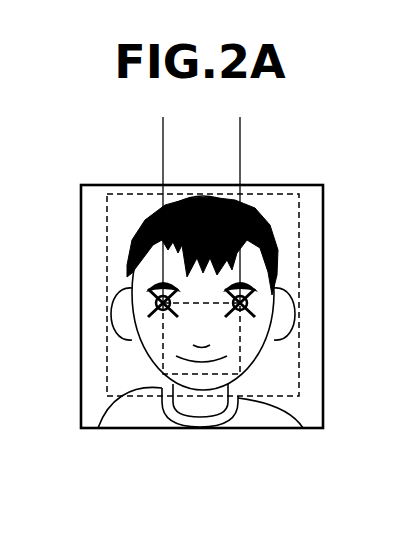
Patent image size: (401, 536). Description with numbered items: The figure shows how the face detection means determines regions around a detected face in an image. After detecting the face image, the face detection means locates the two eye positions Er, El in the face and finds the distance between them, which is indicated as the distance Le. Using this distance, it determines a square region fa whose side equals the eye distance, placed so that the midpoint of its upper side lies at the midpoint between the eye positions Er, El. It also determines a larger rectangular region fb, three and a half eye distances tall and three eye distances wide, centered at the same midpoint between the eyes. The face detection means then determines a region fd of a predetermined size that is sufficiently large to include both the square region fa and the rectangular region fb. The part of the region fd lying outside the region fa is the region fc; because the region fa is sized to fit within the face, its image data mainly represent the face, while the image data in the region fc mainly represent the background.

The distance between eye positions Le is at (163, 142).
The eye position Er is at (152, 304).
The eye position El is at (252, 304).
The square region fa is at (247, 369).
The rectangular region fb is at (282, 194).
The background region fc is at (312, 214).
The region of predetermined size fd is at (323, 260).